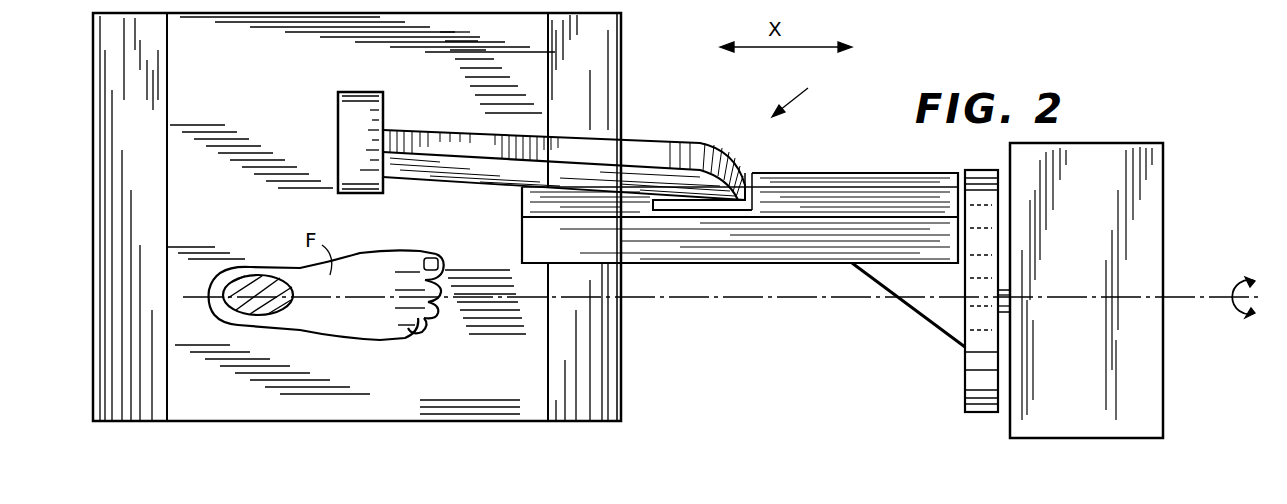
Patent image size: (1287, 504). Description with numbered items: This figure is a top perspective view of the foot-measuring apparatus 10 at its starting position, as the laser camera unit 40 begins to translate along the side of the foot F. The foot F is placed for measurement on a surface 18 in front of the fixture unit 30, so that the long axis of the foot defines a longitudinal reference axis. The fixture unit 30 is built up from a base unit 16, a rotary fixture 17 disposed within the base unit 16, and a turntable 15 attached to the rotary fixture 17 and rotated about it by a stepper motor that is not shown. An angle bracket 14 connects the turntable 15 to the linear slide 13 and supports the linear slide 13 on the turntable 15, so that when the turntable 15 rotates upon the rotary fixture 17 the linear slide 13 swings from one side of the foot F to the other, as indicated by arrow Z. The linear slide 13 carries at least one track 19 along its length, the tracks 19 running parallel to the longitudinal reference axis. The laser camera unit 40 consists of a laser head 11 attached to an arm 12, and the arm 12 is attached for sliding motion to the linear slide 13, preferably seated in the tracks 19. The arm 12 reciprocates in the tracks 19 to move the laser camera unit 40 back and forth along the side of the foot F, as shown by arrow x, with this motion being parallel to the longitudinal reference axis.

The apparatus 10 is at (1134, 123).
The laser head 11 is at (347, 118).
The arm 12 is at (681, 148).
The linear slide 13 is at (773, 230).
The angle bracket 14 is at (930, 307).
The turntable 15 is at (988, 172).
The base unit 16 is at (1147, 368).
The rotary fixture 17 is at (1007, 312).
The surface 18 is at (588, 77).
The track 19 is at (866, 205).
The fixture unit 30 is at (1193, 283).
The laser camera unit 40 is at (808, 93).